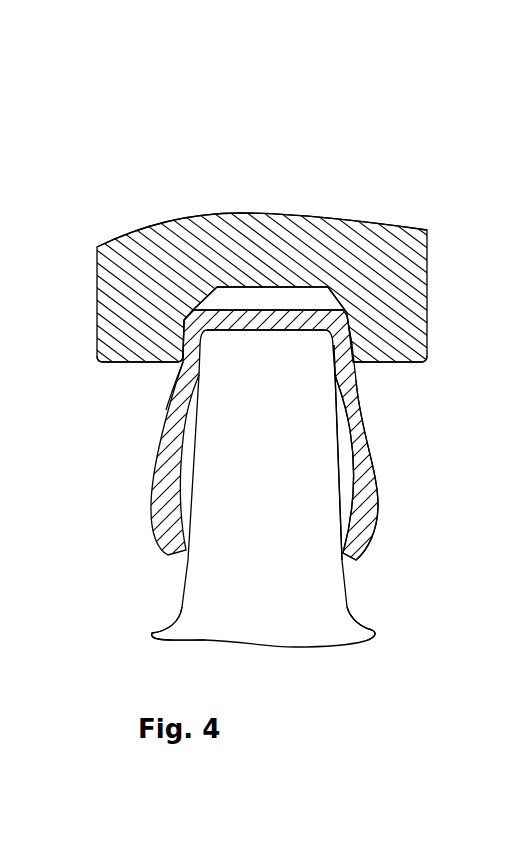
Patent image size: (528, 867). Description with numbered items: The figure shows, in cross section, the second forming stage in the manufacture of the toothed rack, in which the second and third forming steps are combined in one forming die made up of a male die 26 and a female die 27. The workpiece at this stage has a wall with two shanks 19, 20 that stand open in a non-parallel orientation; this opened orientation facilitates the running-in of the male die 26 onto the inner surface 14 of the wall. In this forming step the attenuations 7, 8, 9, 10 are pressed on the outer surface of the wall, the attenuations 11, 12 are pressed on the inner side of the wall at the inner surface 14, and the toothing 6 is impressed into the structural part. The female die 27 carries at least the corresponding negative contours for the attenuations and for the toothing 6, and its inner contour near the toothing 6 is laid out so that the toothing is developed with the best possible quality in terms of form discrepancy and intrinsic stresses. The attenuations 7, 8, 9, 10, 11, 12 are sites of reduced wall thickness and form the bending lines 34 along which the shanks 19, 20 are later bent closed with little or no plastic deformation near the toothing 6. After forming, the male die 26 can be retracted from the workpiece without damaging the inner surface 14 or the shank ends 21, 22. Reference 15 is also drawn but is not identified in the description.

The attenuation 12 is at (96, 258).
The female die 27 is at (240, 233).
The attenuation 8 is at (190, 315).
The toothing 6 is at (275, 296).
The attenuation 11 is at (343, 310).
The attenuation 7 is at (332, 322).
The bending line 34 is at (345, 340).
The attenuation 9 is at (390, 356).
The attenuation 10 is at (183, 350).
The shoulder 15 is at (178, 378).
The inner surface 14 is at (335, 403).
The shank 20 is at (163, 468).
The shank 19 is at (365, 452).
The male die 26 is at (277, 600).
The shank end 22 is at (180, 543).
The shank end 21 is at (347, 543).